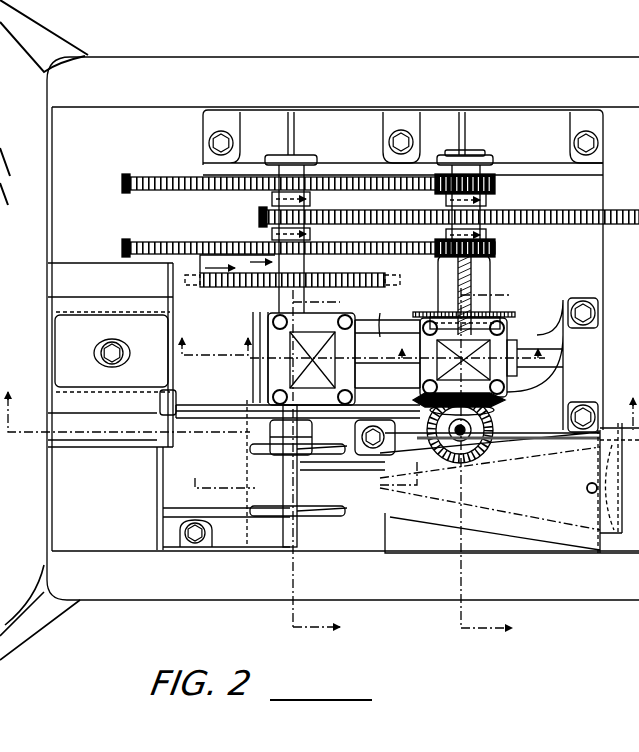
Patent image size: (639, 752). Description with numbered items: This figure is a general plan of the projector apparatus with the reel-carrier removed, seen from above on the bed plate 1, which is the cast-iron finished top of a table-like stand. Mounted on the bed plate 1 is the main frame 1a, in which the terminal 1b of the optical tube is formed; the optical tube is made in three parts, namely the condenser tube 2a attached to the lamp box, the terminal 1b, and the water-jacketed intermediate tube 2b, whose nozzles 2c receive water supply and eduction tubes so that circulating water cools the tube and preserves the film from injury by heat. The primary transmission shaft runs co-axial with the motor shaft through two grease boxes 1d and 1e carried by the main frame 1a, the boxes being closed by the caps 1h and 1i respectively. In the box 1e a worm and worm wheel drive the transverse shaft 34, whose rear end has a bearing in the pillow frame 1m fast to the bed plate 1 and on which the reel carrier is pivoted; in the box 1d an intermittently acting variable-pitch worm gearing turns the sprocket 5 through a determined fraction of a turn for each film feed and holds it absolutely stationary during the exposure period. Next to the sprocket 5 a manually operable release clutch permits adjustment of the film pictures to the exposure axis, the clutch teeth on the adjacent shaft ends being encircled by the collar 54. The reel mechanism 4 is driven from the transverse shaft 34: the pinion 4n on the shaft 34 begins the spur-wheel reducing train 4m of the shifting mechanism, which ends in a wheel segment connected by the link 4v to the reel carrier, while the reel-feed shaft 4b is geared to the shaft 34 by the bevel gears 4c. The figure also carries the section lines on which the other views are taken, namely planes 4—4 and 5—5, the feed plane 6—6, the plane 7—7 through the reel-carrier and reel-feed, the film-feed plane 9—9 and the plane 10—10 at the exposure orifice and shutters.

The bed plate 1 is at (52, 503).
The main frame 1a is at (62, 339).
The terminal 1b is at (303, 472).
The grease box 1d is at (268, 368).
The grease box 1e is at (507, 389).
The cap 1h is at (311, 359).
The cap 1i is at (491, 357).
The pillow frame 1m is at (205, 122).
The condenser tube 2a is at (638, 548).
The water-jacketed intermediate tube 2b is at (448, 520).
The nozzles 2c is at (586, 488).
The reel mechanism 4 is at (320, 377).
The shaft 4b is at (483, 413).
The bevel gears 4c is at (415, 405).
The reducing train 4m is at (380, 247).
The pinion 4n is at (497, 185).
The link 4v is at (228, 418).
The sprocket 5 is at (304, 468).
The section plane 6- 6 is at (324, 464).
The section plane 7- 7 is at (494, 463).
The section plane 9- 9 is at (393, 259).
The section plane 10- 10 is at (250, 306).
The transverse shaft 34 is at (465, 152).
The collar 54 is at (305, 443).